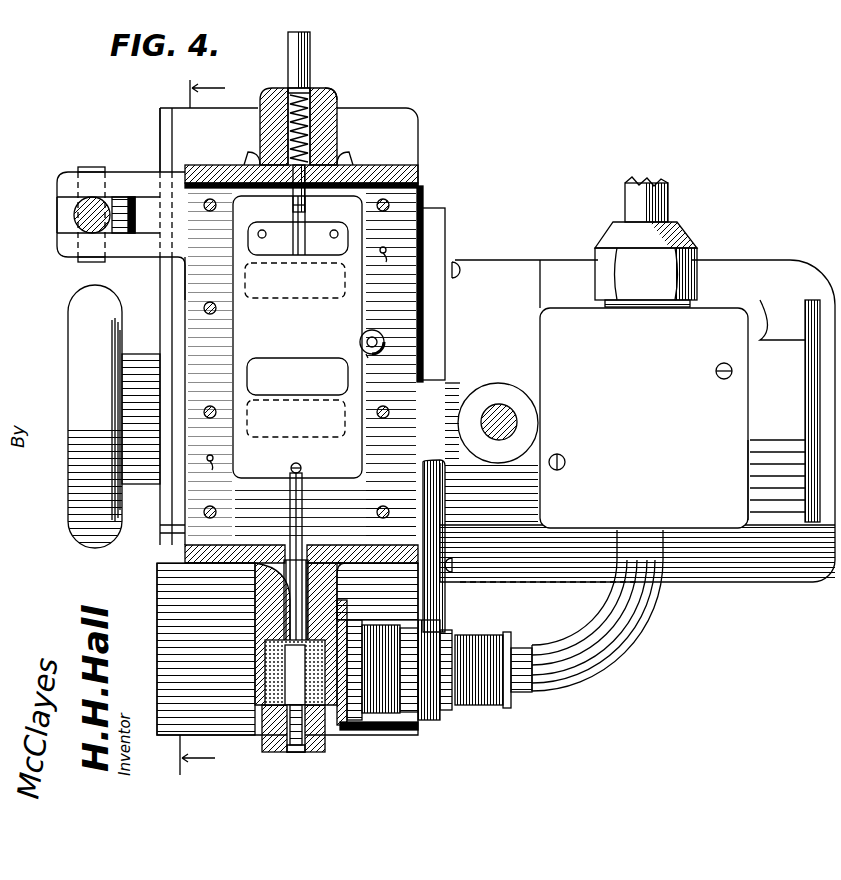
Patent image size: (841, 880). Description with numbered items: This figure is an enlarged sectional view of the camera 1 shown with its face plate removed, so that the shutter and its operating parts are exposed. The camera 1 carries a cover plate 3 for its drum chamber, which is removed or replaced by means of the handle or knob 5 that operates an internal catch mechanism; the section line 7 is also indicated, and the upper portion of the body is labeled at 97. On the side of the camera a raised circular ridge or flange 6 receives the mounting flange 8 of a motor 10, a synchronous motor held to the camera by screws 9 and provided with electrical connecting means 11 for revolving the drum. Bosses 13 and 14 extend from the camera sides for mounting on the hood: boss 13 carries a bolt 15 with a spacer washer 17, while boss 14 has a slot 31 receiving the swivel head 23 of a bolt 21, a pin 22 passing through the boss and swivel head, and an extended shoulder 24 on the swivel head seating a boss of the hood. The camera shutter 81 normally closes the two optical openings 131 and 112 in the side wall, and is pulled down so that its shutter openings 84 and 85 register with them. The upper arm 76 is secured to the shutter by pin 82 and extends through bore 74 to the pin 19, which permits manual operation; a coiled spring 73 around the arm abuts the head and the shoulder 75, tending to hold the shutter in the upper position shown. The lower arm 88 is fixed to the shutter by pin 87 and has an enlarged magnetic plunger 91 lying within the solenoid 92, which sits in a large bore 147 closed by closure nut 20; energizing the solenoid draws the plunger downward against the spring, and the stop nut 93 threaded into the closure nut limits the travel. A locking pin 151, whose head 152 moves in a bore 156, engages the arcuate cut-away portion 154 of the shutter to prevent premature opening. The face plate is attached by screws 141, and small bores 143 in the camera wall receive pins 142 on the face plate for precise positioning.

The camera 1 is at (429, 151).
The cover plate 3 is at (160, 104).
The handle or knob 5 is at (72, 334).
The raised circular ridge or flange 6 is at (424, 212).
The lever hub / section line 7 is at (137, 354).
The mounting flange 8 is at (446, 224).
The screws 9 is at (455, 266).
The motor 10 is at (508, 256).
The electrical connecting means 11 is at (760, 390).
The boss 13 is at (465, 390).
The boss 14 is at (66, 250).
The bolt 15 is at (506, 410).
The spacer washer 17 is at (505, 386).
The pin 19 is at (306, 80).
The closure nut 20 is at (316, 752).
The bolt 21 is at (75, 219).
The pin 22 is at (100, 167).
The swivel head 23 is at (120, 230).
The extended shoulder 24 is at (119, 200).
The slot 31 is at (62, 203).
The coiled spring 73 is at (348, 105).
The bore 74 is at (312, 95).
The shoulder 75 is at (328, 165).
The upper arm 76 is at (340, 98).
The camera shutter 81 is at (297, 337).
The pin 82 is at (306, 210).
The shutter opening 84 is at (250, 242).
The shutter opening 85 is at (308, 360).
The pin 87 is at (303, 468).
The arm 88 is at (304, 540).
The plunger 91 is at (308, 600).
The solenoid 92 is at (326, 738).
The stop nut 93 is at (292, 748).
The top flange 97 is at (243, 108).
The optical opening 112 is at (278, 432).
The optical opening 131 is at (288, 292).
The screws 141 is at (206, 200).
The pins 142 is at (383, 247).
The small bores 143 is at (299, 376).
The bore 147 is at (266, 690).
The locking pin 151 is at (378, 340).
The head 152 is at (381, 350).
The arcuate cut-away portion 154 is at (362, 338).
The bore 156 is at (370, 356).